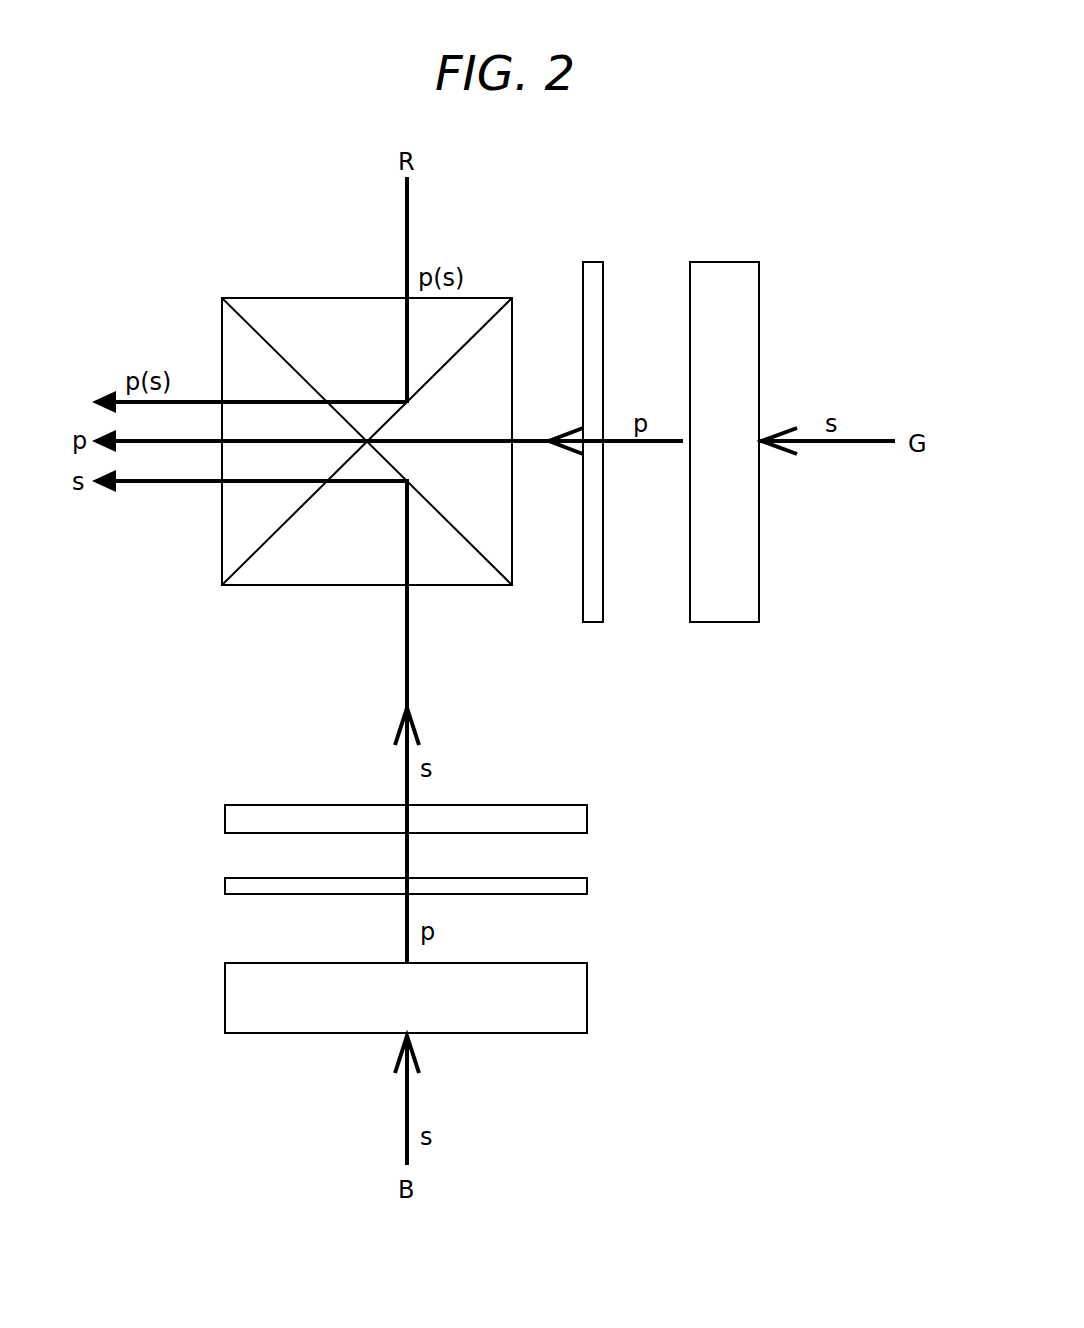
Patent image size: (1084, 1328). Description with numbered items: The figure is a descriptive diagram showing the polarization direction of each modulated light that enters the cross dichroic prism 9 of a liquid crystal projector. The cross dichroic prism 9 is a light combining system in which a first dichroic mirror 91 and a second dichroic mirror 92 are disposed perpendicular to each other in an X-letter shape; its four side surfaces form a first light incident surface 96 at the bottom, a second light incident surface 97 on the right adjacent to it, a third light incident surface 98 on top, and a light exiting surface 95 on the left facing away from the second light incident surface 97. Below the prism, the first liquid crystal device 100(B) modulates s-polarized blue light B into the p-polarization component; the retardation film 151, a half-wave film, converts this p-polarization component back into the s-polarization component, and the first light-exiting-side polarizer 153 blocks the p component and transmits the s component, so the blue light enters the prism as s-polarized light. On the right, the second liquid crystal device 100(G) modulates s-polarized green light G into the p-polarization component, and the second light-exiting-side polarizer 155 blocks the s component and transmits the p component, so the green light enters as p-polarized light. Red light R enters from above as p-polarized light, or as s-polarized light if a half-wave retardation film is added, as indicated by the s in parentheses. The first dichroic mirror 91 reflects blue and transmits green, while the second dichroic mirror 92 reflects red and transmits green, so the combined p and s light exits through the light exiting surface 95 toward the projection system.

The cross dichroic prism 9 is at (261, 297).
The first dichroic mirror 91 is at (468, 546).
The second dichroic mirror 92 is at (481, 330).
The light exiting surface 95 is at (221, 515).
The first light incident surface 96 is at (305, 586).
The second light incident surface 97 is at (513, 520).
The third light incident surface 98 is at (316, 297).
The liquid crystal device 100 is at (720, 261).
The retardation film 151 is at (587, 815).
The first light-exiting-side polarizer 153 is at (587, 885).
The second light-exiting-side polarizer 155 is at (593, 261).